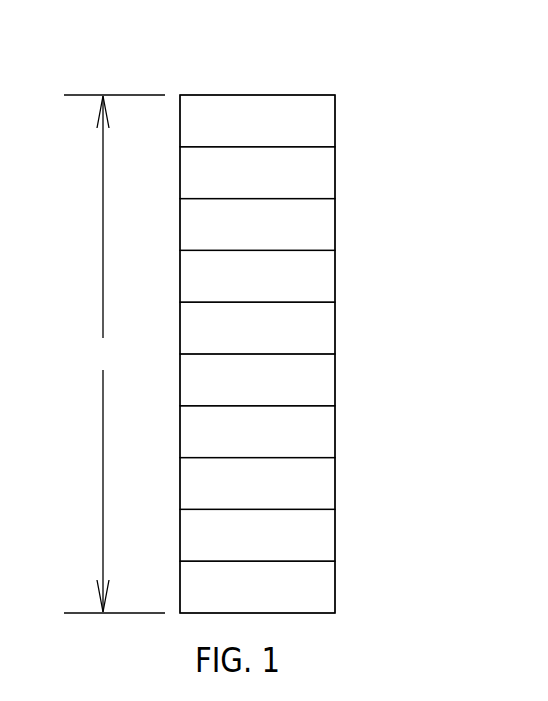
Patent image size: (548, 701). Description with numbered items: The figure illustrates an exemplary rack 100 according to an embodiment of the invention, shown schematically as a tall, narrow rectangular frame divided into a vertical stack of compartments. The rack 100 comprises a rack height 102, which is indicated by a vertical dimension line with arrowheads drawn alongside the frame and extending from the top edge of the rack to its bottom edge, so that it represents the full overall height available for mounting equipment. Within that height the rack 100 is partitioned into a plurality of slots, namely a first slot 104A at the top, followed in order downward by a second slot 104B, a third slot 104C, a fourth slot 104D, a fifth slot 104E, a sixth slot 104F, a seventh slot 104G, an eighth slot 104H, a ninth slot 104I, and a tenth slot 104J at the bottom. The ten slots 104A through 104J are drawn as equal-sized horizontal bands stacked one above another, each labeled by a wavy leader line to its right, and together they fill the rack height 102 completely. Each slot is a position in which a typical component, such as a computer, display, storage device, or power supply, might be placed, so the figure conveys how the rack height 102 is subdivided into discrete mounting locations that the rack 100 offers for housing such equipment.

The rack 100 is at (154, 62).
The rack height 102 is at (114, 354).
The slot 104A is at (335, 120).
The slot 104B is at (335, 172).
The slot 104C is at (335, 224).
The slot 104D is at (335, 276).
The slot 104E is at (335, 328).
The slot 104F is at (335, 380).
The slot 104G is at (335, 432).
The slot 104H is at (335, 483).
The slot 104I is at (335, 535).
The slot 104J is at (335, 587).